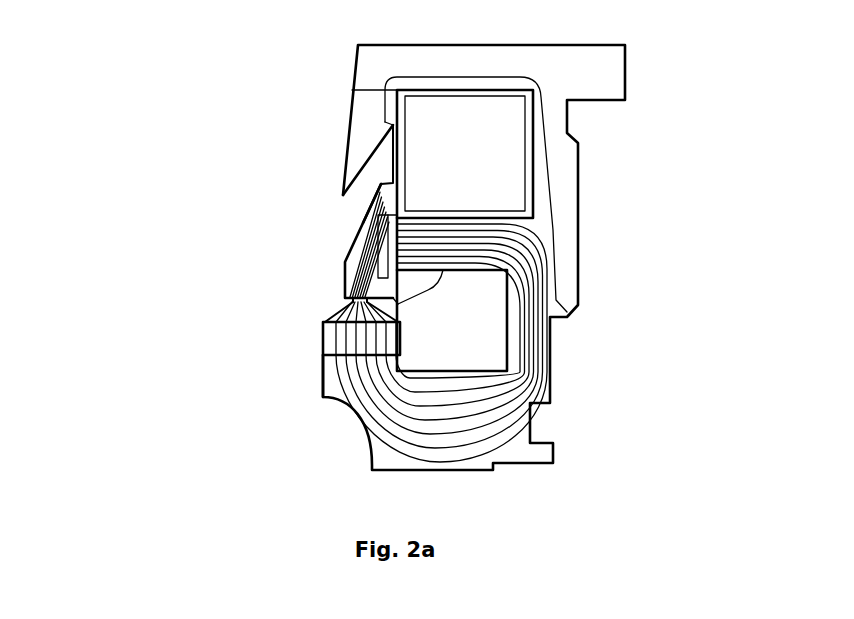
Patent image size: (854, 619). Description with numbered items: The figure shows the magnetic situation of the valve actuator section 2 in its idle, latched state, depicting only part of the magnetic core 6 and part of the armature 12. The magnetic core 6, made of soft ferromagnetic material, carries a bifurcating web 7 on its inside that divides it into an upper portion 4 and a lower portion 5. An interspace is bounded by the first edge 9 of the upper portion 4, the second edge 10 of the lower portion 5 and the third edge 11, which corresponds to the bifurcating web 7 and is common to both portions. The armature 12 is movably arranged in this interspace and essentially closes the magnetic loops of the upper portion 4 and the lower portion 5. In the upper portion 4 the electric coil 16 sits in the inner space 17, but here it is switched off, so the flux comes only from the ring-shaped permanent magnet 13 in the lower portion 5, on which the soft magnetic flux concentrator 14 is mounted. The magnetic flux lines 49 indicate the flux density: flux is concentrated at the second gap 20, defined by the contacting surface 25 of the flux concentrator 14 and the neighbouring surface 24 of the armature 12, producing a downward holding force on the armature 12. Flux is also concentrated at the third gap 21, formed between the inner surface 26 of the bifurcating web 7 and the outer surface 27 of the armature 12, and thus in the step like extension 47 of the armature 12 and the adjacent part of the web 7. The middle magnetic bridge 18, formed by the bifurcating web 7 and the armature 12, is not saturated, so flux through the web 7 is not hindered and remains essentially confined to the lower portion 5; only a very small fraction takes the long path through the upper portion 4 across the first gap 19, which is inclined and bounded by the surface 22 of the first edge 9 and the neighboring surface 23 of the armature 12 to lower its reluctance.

The valve actuator section 2 is at (100, 125).
The upper portion 4 is at (658, 148).
The lower portion 5 is at (683, 323).
The magnetic core 6 is at (533, 57).
The bifurcating web 7 is at (537, 323).
The first edge 9 is at (355, 168).
The second edge 10 is at (335, 350).
The third edge 11 is at (402, 254).
The armature 12 is at (284, 241).
The permanent magnet 13 is at (288, 350).
The flux concentrator 14 is at (335, 342).
The electric coil 16 is at (510, 122).
The inner space 17 is at (537, 121).
The middle magnetic bridge 18 is at (672, 258).
The first gap 19 is at (343, 208).
The second gap 20 is at (336, 316).
The third gap 21 is at (355, 225).
The surface of the first edge 22 is at (366, 152).
The neighboring surface of the armature 23 is at (382, 242).
The neighbouring surface of the armature 24 is at (398, 303).
The contacting surface 25 is at (373, 312).
The inner surface of the bifurcating web 26 is at (402, 236).
The outer surface of the armature 27 is at (403, 290).
The step like extension 47 is at (327, 304).
The magnetic flux lines 49 is at (535, 390).